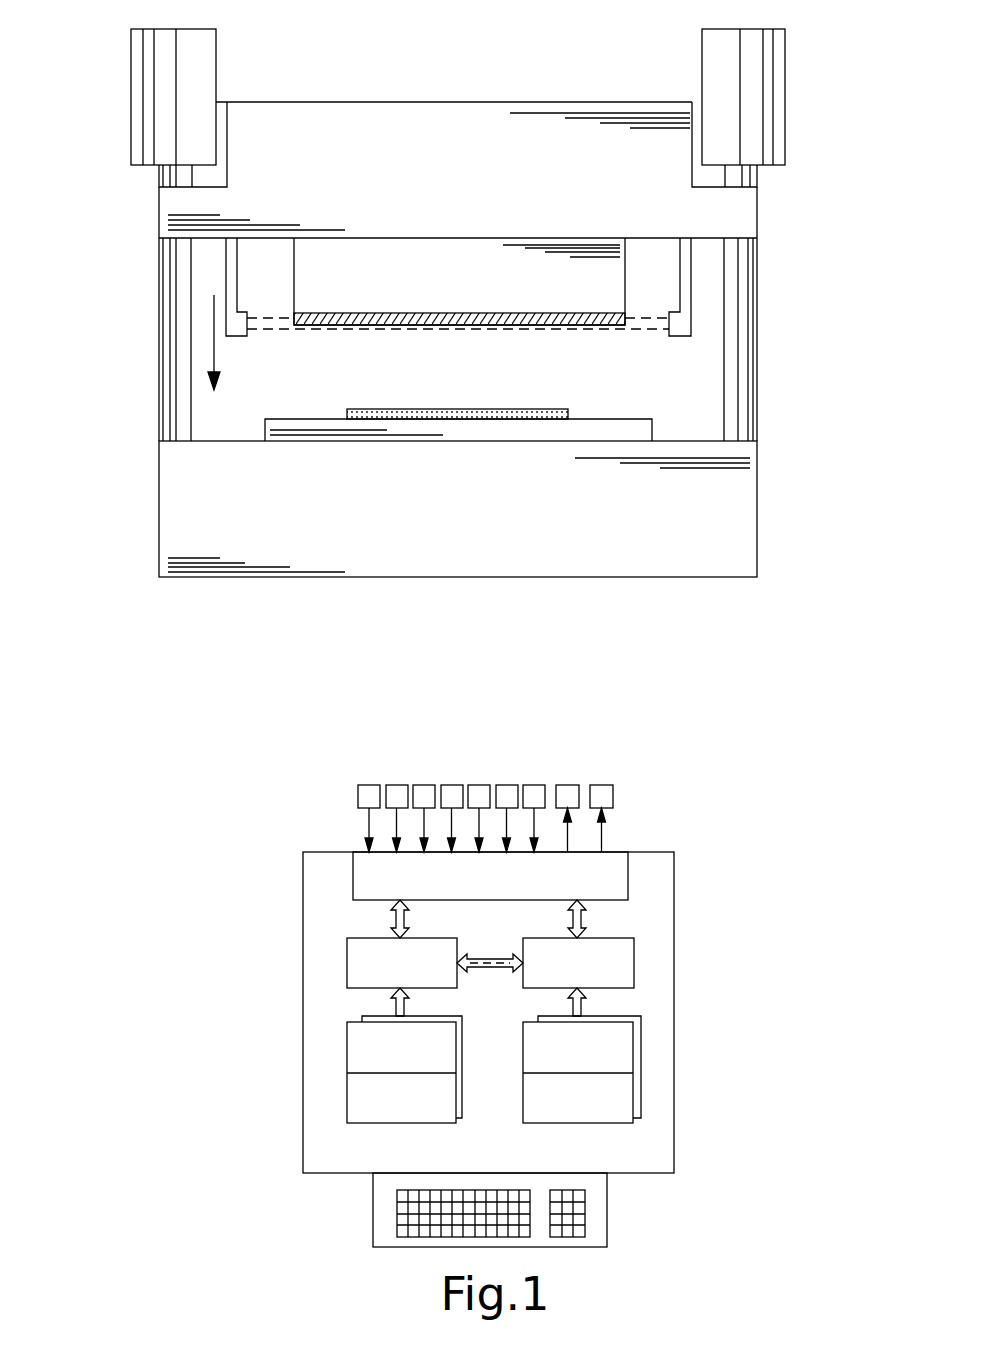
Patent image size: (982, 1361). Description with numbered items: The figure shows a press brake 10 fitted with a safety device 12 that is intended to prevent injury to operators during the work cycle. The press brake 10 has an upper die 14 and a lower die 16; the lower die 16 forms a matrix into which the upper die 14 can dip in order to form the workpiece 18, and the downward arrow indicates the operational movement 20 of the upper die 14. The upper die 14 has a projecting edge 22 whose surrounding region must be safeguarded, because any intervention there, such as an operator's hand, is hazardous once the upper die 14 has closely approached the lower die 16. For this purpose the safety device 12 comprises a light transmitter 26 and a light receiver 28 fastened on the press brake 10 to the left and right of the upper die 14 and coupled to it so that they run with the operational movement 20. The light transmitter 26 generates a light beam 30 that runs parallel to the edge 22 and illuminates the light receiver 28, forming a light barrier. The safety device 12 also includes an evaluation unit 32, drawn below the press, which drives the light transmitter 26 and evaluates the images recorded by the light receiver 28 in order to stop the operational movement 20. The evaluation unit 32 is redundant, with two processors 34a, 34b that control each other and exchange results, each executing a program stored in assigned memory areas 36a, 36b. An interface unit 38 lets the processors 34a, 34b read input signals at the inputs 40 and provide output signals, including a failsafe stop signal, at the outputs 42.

The press brake 10 is at (215, 633).
The safety device 12 is at (672, 358).
The upper die 14 is at (432, 250).
The lower die 16 is at (492, 428).
The workpiece 18 is at (525, 410).
The operational movement 20 is at (212, 348).
The projecting edge 22 is at (317, 325).
The light transmitter 26 is at (237, 292).
The light receiver 28 is at (683, 327).
The light beam 30 is at (652, 330).
The evaluation unit 32 is at (675, 923).
The processor 34a is at (360, 967).
The processor 34b is at (635, 972).
The memory area 36a is at (355, 1068).
The memory area 36b is at (641, 1073).
The interface unit 38 is at (615, 883).
The inputs 40 is at (348, 778).
The outputs 42 is at (553, 778).